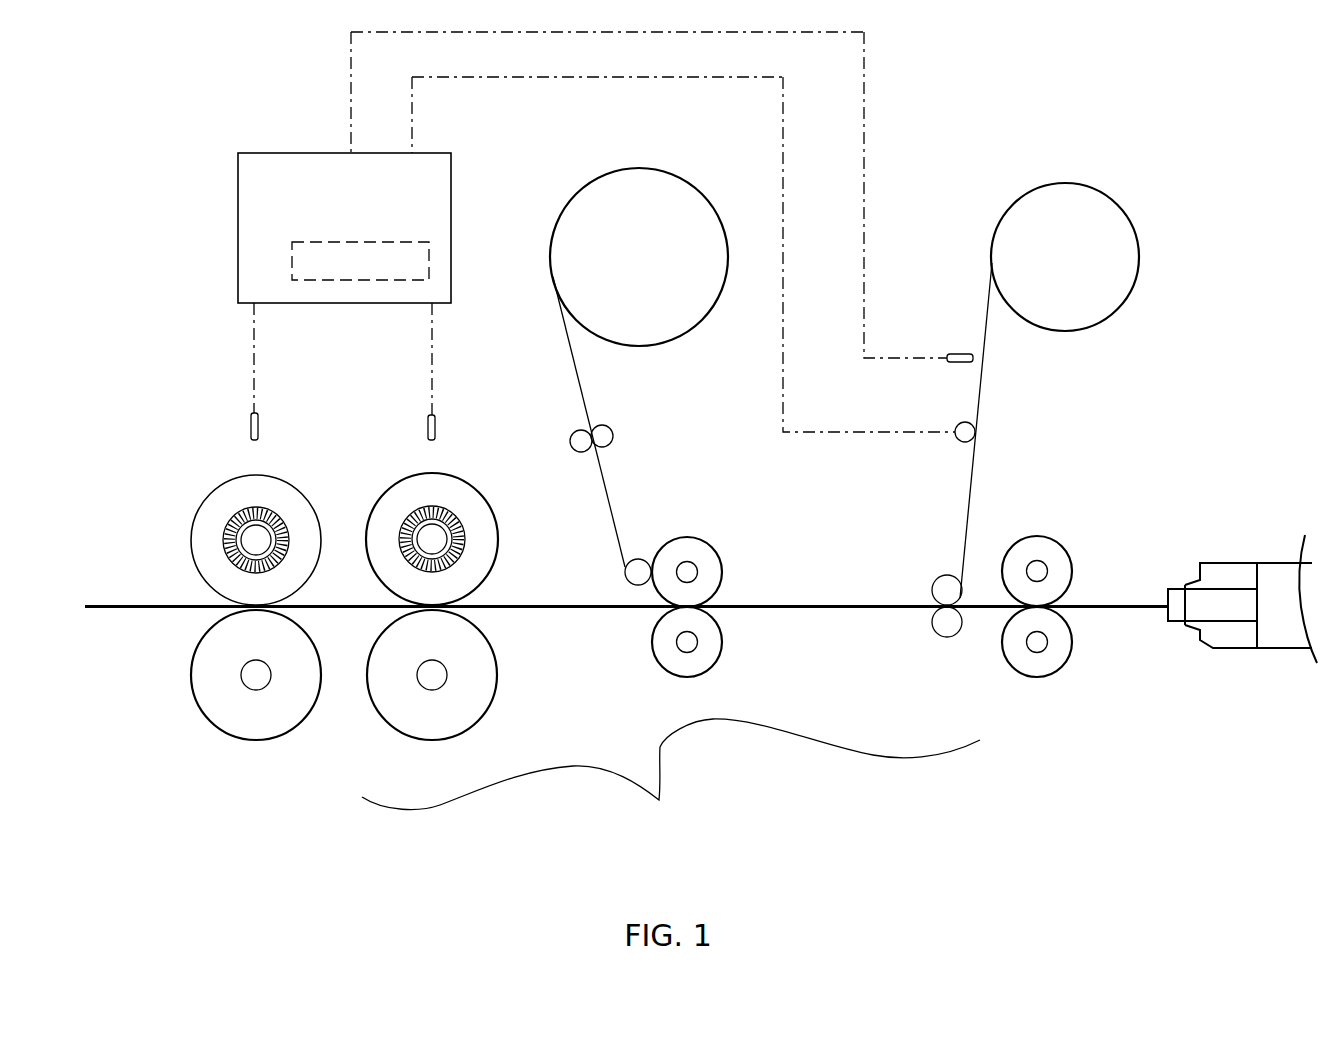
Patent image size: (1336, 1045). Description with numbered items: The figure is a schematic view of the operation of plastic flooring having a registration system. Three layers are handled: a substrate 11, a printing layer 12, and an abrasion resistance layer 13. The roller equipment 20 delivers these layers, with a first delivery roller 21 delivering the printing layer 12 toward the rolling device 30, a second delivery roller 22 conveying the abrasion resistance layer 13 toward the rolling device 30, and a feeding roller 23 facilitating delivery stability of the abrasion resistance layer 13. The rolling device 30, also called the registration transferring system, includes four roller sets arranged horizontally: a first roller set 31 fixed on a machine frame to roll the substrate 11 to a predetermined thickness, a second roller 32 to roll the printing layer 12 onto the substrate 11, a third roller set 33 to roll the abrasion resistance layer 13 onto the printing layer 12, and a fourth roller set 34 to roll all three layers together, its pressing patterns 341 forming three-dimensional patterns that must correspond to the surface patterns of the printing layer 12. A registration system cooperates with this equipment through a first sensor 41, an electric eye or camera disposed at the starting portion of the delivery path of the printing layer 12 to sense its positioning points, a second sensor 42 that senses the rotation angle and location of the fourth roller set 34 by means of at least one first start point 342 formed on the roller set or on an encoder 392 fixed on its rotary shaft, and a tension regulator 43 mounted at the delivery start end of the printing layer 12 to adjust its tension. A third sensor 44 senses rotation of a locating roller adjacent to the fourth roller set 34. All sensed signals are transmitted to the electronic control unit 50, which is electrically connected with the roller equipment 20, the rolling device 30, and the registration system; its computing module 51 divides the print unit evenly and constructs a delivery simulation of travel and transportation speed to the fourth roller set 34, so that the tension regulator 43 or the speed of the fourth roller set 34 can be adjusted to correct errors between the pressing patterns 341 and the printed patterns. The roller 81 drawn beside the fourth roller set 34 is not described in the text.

The substrate 11 is at (1118, 610).
The printing layer 12 is at (980, 398).
The abrasion resistance layer 13 is at (575, 370).
The roller equipment 20 is at (955, 127).
The first delivery roller 21 is at (1065, 200).
The second delivery roller 22 is at (640, 195).
The feeding roller 23 is at (608, 437).
The rolling device 30 is at (591, 631).
The first roller set 31 is at (1022, 660).
The second roller 32 is at (945, 585).
The third roller set 33 is at (658, 645).
The fourth roller set 34 is at (243, 632).
The pressing patterns 341 is at (192, 555).
The first start point 342 is at (253, 503).
The encoder 392 is at (227, 522).
The first sensor 41 is at (955, 352).
The second sensor 42 is at (250, 423).
The tension regulator 43 is at (958, 425).
The third sensor 44 is at (427, 427).
The electronic control unit 50 is at (338, 167).
The computing module 51 is at (420, 248).
The pressing roller 81 is at (400, 493).